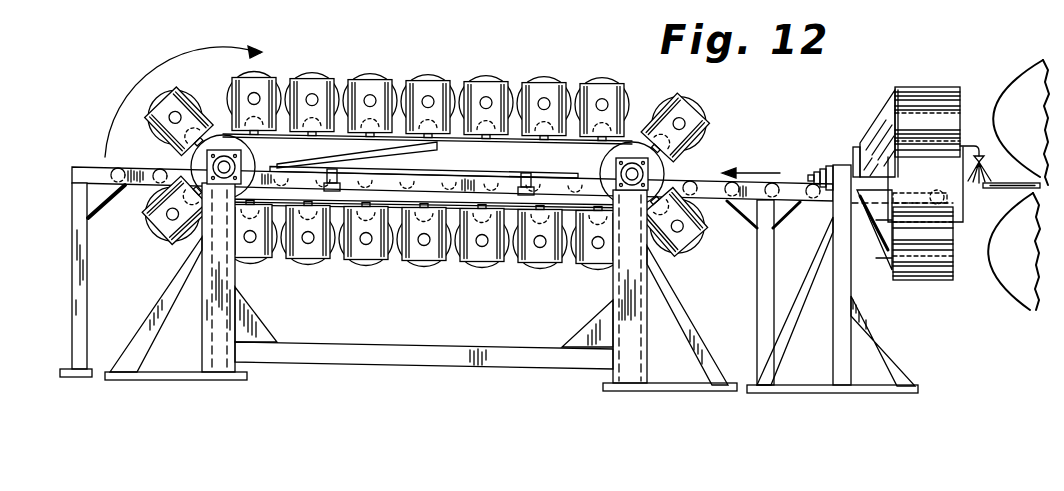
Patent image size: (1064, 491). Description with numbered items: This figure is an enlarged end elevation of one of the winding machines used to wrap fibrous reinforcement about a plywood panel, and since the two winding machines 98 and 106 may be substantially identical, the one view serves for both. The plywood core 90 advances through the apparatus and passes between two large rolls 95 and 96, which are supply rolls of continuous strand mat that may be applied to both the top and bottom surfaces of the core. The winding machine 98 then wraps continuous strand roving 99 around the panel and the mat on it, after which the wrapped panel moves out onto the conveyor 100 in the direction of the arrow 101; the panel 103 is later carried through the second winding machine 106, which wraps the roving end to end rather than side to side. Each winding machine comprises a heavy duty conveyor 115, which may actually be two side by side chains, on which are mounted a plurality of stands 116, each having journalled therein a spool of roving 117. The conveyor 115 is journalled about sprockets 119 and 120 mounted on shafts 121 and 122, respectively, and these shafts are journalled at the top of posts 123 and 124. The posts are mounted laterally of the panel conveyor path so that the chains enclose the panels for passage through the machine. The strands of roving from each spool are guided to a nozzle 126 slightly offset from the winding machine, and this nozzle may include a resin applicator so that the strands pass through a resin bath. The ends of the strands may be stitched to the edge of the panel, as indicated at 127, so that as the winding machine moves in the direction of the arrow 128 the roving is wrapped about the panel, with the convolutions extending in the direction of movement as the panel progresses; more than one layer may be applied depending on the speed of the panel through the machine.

The plywood core 90 is at (1007, 192).
The supply roll of continuous strand mat 95 is at (1025, 73).
The supply roll of continuous strand mat 96 is at (1000, 281).
The winding machine 98 is at (919, 76).
The continuous strand roving 99 is at (984, 154).
The conveyor 100 is at (792, 178).
The arrow 101 is at (752, 173).
The panel 103 is at (503, 170).
The winding machine 106 is at (507, 72).
The heavy duty conveyor 115 is at (450, 145).
The stands 116 is at (374, 77).
The spool of roving 117 is at (433, 78).
The sprocket 119 is at (223, 135).
The sprocket 120 is at (604, 158).
The shaft 121 is at (207, 164).
The shaft 122 is at (634, 160).
The post 123 is at (238, 282).
The post 124 is at (612, 288).
The nozzle 126 is at (437, 143).
The stitched strand ends 127 is at (278, 165).
The arrow 128 is at (168, 70).